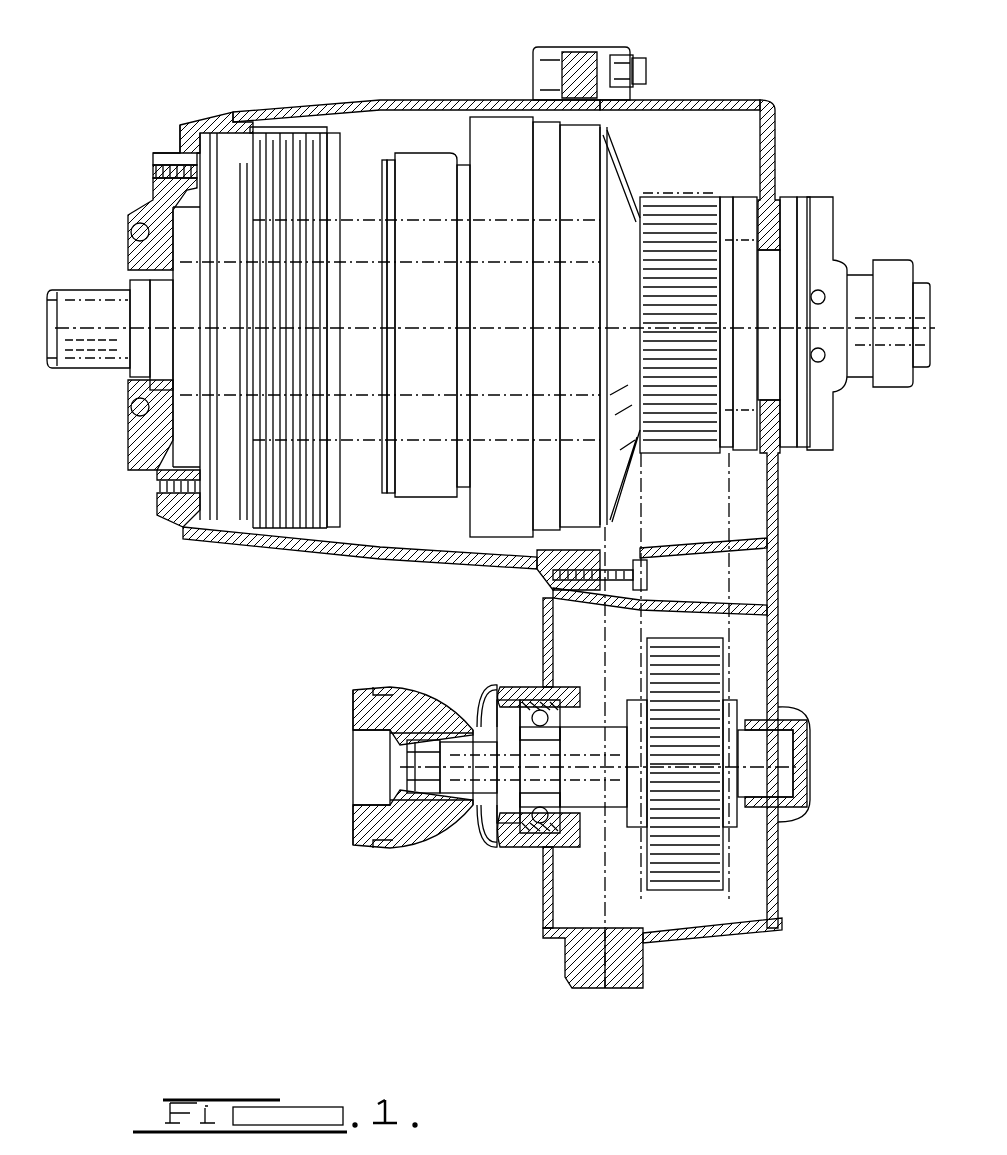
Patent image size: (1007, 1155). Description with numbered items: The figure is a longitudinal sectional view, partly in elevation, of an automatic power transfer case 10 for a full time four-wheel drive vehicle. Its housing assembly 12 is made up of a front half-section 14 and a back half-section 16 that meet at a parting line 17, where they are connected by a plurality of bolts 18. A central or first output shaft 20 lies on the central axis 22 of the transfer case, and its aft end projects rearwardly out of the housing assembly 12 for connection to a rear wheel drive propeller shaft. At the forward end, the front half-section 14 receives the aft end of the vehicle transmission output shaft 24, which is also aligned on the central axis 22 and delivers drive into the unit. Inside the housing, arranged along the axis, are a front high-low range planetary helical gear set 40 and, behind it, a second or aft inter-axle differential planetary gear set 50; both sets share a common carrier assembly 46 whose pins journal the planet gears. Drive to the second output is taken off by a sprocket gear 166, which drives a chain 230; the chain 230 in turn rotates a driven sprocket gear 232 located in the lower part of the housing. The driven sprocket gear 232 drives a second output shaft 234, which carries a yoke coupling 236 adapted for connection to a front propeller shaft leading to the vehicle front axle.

The automatic power transfer case 10 is at (710, 72).
The housing assembly 12 is at (757, 98).
The front half-section 14 is at (362, 102).
The back half-section 16 is at (723, 103).
The parting line 17 is at (602, 98).
The bolts 18 is at (642, 67).
The central or first output shaft 20 is at (930, 368).
The central axis 22 is at (75, 335).
The vehicle transmission output shaft 24 is at (52, 300).
The front high-low range planetary helical gear set 40 is at (378, 143).
The carrier assembly 46 is at (392, 151).
The second or aft inter-axle differential planetary gear set 50 is at (440, 145).
The sprocket gear 166 is at (693, 223).
The chain 230 is at (673, 198).
The driven sprocket gear 232 is at (717, 683).
The second output shaft 234 is at (782, 758).
The yoke coupling 236 is at (428, 705).